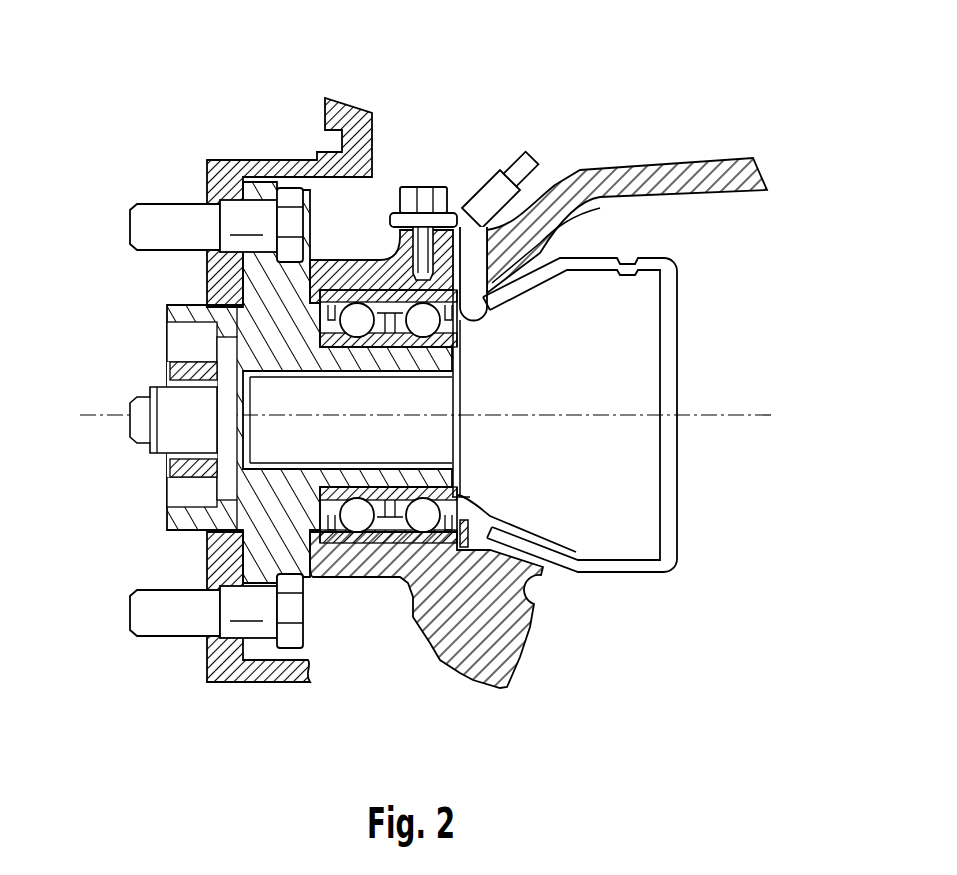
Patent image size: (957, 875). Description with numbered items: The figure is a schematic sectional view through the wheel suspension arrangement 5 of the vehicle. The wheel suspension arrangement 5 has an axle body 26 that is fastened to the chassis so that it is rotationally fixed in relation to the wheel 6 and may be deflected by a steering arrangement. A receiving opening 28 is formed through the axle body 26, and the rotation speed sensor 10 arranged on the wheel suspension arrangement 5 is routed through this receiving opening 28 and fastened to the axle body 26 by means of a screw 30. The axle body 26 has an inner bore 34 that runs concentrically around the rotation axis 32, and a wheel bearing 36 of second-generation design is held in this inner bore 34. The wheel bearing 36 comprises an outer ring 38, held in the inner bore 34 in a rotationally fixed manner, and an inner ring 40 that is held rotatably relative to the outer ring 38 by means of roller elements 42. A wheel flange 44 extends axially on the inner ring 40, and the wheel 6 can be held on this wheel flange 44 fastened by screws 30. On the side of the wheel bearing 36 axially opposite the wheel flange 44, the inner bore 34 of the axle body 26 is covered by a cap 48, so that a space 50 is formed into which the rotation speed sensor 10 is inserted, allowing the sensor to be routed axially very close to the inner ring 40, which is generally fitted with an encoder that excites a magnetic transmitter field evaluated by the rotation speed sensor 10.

The wheel suspension arrangement 5 is at (140, 162).
The wheel 6 is at (226, 158).
The rotation speed sensor 10 is at (472, 153).
The axle body 26 is at (716, 157).
The receiving opening 28 is at (545, 247).
The screw 30 is at (428, 187).
The rotation axis 32 is at (733, 416).
The inner bore 34 is at (470, 428).
The wheel bearing 36 is at (488, 338).
The outer ring 38 is at (382, 537).
The inner ring 40 is at (462, 493).
The roller elements 42 is at (478, 510).
The wheel flange 44 is at (267, 188).
The cap 48 is at (678, 329).
The space 50 is at (626, 342).